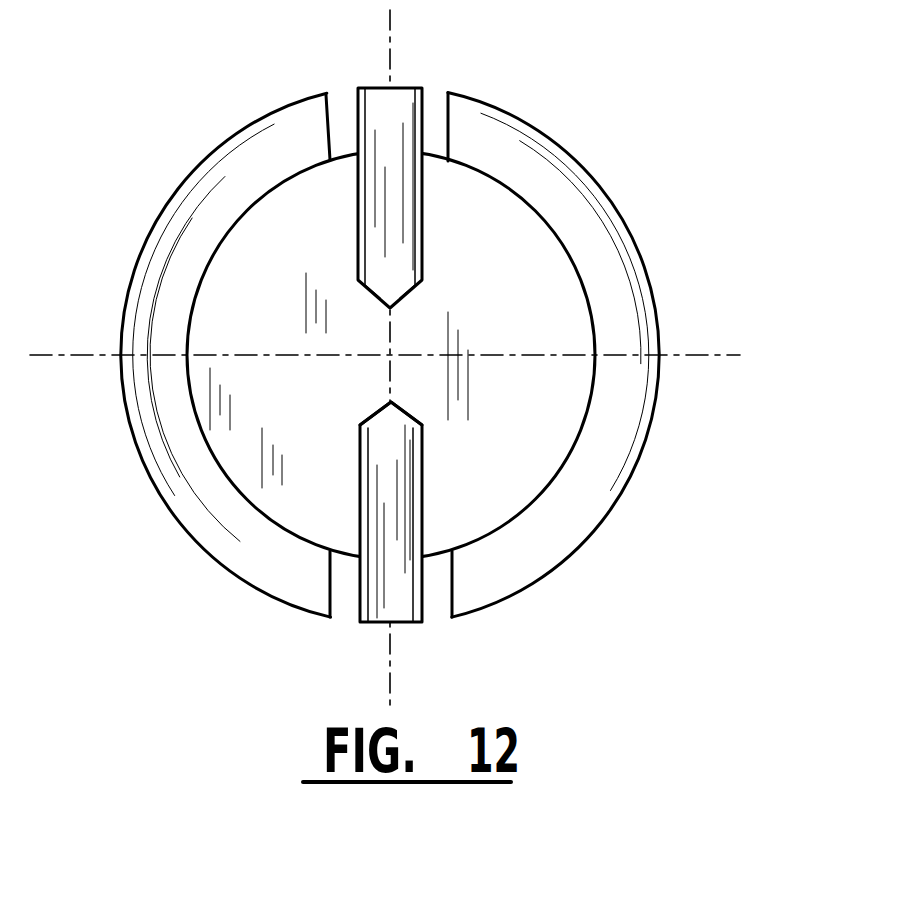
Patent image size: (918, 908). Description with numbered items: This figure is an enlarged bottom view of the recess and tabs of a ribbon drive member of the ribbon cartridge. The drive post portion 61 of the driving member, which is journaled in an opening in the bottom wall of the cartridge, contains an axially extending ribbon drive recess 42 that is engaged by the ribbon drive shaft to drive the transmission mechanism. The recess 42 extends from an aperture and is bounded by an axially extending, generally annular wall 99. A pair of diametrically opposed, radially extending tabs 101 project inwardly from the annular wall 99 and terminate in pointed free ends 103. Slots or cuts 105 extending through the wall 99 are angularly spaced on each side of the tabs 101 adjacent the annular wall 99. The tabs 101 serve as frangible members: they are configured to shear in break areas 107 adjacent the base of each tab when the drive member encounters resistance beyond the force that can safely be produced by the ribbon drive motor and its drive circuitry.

The ribbon drive recess 42 is at (540, 297).
The drive post portion 61 is at (640, 466).
The annular wall 99 is at (592, 314).
The tabs 101 is at (423, 478).
The pointed free ends 103 is at (382, 407).
The slots 105 is at (430, 112).
The break areas 107 is at (347, 188).